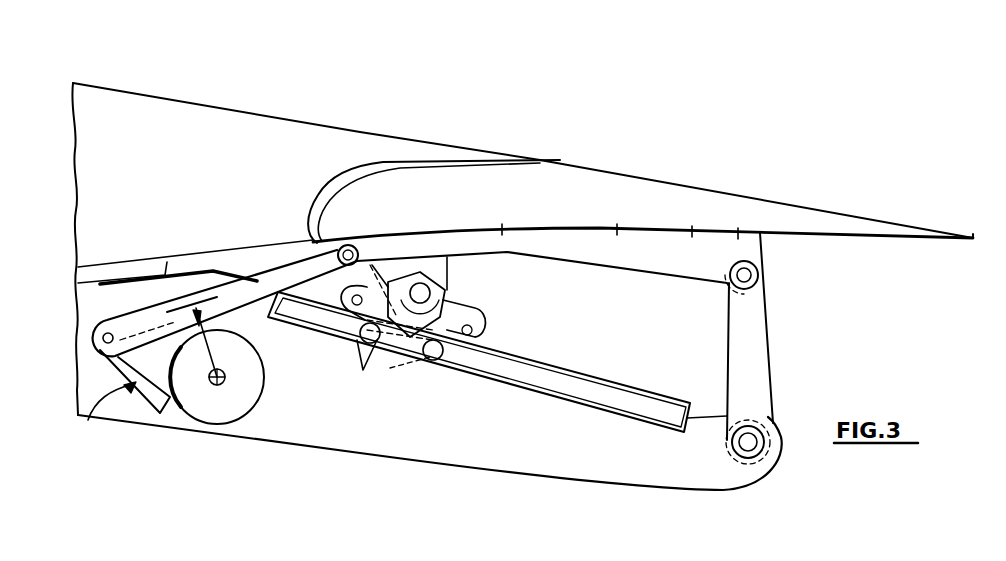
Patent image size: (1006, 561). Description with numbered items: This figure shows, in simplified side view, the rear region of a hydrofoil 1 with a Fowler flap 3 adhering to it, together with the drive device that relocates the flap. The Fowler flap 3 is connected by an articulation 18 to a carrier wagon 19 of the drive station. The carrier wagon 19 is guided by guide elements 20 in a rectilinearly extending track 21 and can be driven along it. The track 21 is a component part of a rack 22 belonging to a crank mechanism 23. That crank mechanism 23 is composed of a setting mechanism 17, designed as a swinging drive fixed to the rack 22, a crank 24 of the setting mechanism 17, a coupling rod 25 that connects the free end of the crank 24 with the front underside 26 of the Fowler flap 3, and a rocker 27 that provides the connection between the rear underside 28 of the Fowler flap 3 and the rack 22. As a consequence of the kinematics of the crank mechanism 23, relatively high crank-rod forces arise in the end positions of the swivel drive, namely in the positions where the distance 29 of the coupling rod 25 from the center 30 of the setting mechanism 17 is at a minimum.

The hydrofoil 1 is at (100, 193).
The Fowler flap 3 is at (588, 185).
The setting mechanism 17 is at (228, 425).
The articulation 18 is at (432, 292).
The carrier wagon 19 is at (470, 312).
The guide elements 20 is at (423, 337).
The track 21 is at (622, 393).
The rack 22 is at (548, 456).
The crank mechanism 23 is at (101, 417).
The crank 24 is at (157, 378).
The coupling rod 25 is at (268, 275).
The front underside 26 is at (418, 246).
The rocker 27 is at (757, 388).
The rear underside 28 is at (720, 253).
The distance 29 is at (213, 347).
The center 30 is at (227, 382).